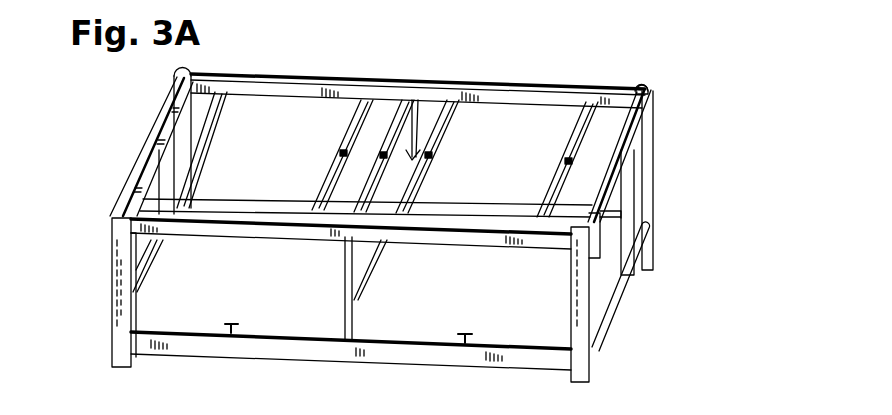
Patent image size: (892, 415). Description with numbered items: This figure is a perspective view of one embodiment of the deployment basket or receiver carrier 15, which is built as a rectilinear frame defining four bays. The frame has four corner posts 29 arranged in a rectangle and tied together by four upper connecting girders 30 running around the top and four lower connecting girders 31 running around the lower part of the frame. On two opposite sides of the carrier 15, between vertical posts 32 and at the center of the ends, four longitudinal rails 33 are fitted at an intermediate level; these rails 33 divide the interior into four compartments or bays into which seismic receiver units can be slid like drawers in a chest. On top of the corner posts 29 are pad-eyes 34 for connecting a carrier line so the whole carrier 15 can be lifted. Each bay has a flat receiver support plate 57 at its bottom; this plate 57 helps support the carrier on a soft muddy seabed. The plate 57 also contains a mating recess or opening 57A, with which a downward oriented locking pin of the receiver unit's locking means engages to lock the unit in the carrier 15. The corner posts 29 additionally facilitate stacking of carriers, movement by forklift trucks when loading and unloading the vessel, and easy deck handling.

The carrier 15 is at (667, 111).
The corner posts 29 is at (205, 80).
The upper connecting girders 30 is at (160, 127).
The lower connecting girders 31 is at (626, 297).
The vertical posts 32 is at (612, 222).
The longitudinal rails 33 is at (155, 257).
The pad-eyes 34 is at (647, 80).
The receiver support plate 57 is at (522, 322).
The recess or opening 57A is at (232, 334).